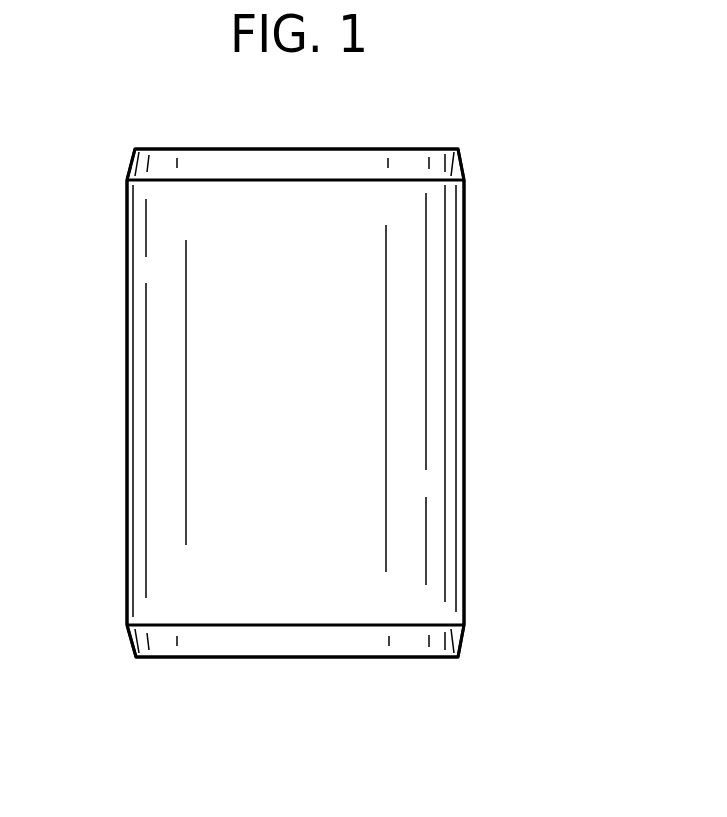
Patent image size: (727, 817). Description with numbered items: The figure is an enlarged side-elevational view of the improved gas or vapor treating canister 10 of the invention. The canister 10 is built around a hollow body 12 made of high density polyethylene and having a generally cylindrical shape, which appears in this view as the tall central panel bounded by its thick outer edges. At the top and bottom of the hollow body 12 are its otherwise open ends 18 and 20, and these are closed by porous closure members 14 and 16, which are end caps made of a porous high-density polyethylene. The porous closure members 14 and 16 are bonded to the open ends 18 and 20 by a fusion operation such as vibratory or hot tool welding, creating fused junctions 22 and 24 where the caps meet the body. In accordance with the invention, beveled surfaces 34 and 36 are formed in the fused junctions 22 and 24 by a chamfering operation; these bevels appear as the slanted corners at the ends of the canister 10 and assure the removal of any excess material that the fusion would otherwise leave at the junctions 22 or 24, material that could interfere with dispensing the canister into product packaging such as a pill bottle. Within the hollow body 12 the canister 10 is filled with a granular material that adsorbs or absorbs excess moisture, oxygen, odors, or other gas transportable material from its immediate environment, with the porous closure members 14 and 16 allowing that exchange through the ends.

The gas or vapor treating canister 10 is at (527, 253).
The hollow body 12 is at (466, 444).
The porous closure member 14 is at (250, 180).
The porous closure member 16 is at (287, 626).
The open end 18 is at (316, 148).
The open end 20 is at (287, 658).
The junction 22 is at (459, 160).
The junction 24 is at (133, 640).
The beveled surface 34 is at (133, 160).
The beveled surface 36 is at (458, 640).